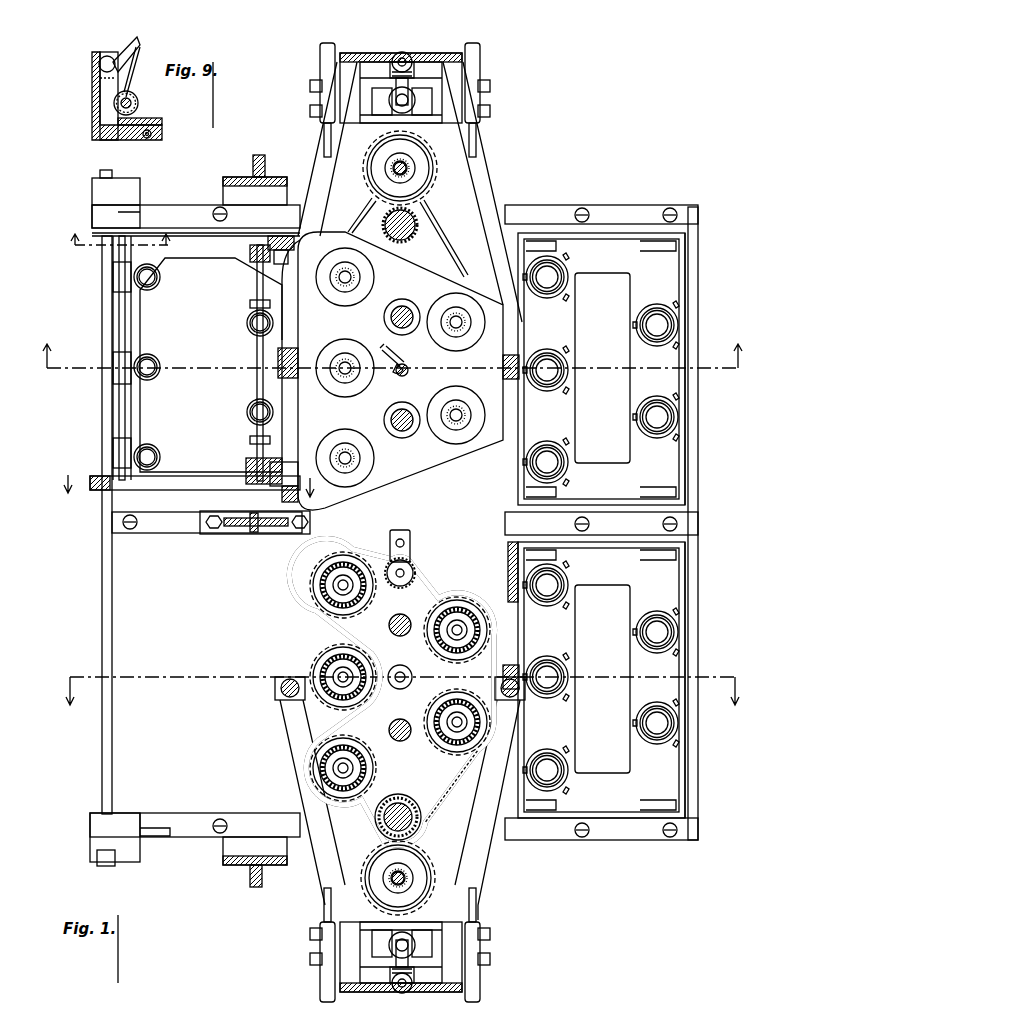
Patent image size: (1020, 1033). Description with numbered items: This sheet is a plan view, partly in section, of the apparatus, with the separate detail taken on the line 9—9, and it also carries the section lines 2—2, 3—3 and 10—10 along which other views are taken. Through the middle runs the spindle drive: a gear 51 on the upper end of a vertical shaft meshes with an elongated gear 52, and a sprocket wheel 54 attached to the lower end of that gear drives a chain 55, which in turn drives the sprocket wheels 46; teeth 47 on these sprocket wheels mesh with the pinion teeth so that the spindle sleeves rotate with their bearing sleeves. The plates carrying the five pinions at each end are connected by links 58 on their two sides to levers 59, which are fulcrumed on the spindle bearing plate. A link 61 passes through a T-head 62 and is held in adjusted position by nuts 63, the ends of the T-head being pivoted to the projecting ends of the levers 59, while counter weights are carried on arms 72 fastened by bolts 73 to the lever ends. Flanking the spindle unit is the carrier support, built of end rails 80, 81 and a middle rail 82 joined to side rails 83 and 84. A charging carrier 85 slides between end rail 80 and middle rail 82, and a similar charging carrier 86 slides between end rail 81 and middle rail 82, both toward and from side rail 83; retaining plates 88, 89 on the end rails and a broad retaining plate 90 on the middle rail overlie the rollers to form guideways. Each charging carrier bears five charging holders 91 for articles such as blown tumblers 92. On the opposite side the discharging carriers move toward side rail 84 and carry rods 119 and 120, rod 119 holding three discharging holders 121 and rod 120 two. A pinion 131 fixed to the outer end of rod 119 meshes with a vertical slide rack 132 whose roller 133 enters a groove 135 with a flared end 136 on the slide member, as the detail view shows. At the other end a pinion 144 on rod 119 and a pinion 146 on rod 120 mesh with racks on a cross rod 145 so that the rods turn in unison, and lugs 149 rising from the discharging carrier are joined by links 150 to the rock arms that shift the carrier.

In FIG. 1, the section line 2— 2 is at (391, 346).
In FIG. 1, the section line 3— 3 is at (403, 705).
In FIG. 1, the section line 9— 9 is at (118, 244).
In FIG. 1, the section line 10— 10 is at (186, 484).
In FIG. 1, the sprocket wheels 46 is at (352, 736).
In FIG. 1, the teeth 47 is at (350, 760).
In FIG. 1, the gear 51 is at (432, 850).
In FIG. 1, the elongated gear 52 is at (404, 805).
In FIG. 1, the sprocket wheel 54 is at (394, 800).
In FIG. 1, the chain 55 is at (455, 795).
In FIG. 1, the links 58 is at (288, 678).
In FIG. 1, the levers 59 is at (470, 175).
In FIG. 1, the link 61 is at (404, 52).
In FIG. 1, the T-head 62 is at (428, 52).
In FIG. 1, the nuts 63 is at (392, 58).
In FIG. 1, the arms 72 is at (481, 62).
In FIG. 1, the bolts 73 is at (490, 110).
In FIG. 1, the end rail 80 is at (590, 212).
In FIG. 1, the end rail 81 is at (614, 840).
In FIG. 1, the middle rail 82 is at (262, 534).
In FIG. 1, the side rail 83 is at (698, 450).
In FIG. 1, the side rail 84 is at (102, 545).
In FIG. 1, the charging carrier 85 is at (601, 369).
In FIG. 1, the charging carrier 86 is at (601, 680).
In FIG. 1, the retaining plate 88 is at (228, 205).
In FIG. 1, the retaining plate 89 is at (548, 840).
In FIG. 1, the broad retaining plate 90 is at (174, 534).
In FIG. 1, the charging holders 91 is at (547, 300).
In FIG. 1, the blown tumblers 92 is at (558, 585).
In FIG. 9, the rod 119 is at (132, 107).
In FIG. 1, the rod 119 is at (126, 420).
In FIG. 1, the rod 120 is at (257, 383).
In FIG. 1, the discharging holders 121 is at (247, 318).
In FIG. 9, the pinion 131 is at (138, 101).
In FIG. 9, the vertical slide rack 132 is at (112, 118).
In FIG. 9, the roller 133 is at (98, 66).
In FIG. 9, the groove 135 is at (116, 58).
In FIG. 9, the flared end 136 is at (133, 73).
In FIG. 1, the pinion 144 is at (105, 478).
In FIG. 1, the rod 145 is at (103, 482).
In FIG. 1, the pinion 146 is at (250, 462).
In FIG. 1, the lugs 149 is at (300, 236).
In FIG. 1, the links 150 is at (280, 238).